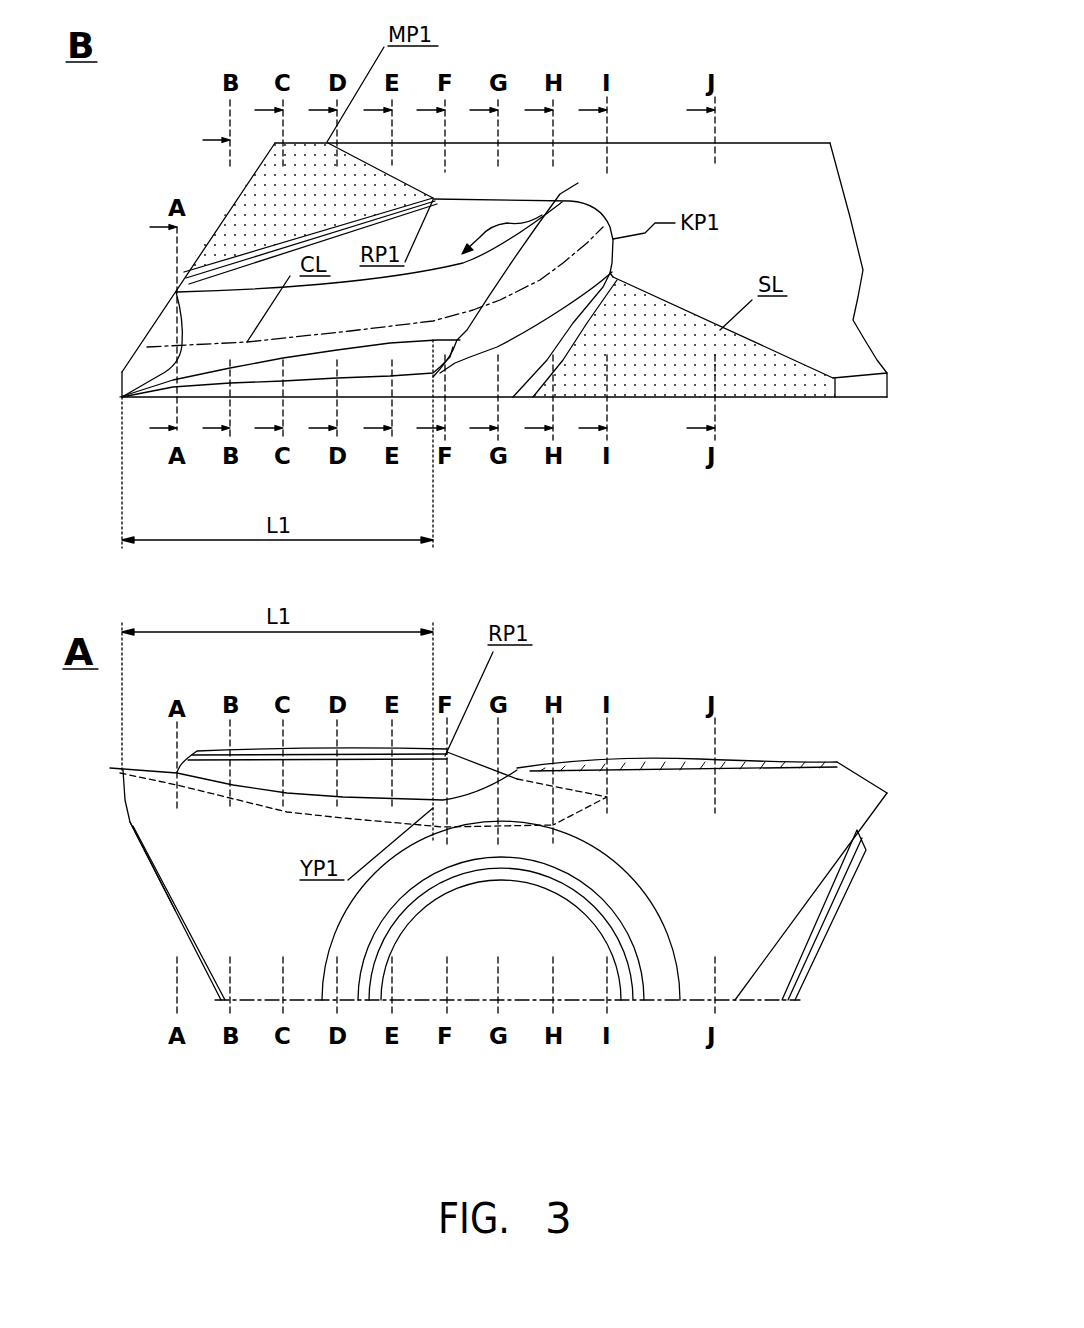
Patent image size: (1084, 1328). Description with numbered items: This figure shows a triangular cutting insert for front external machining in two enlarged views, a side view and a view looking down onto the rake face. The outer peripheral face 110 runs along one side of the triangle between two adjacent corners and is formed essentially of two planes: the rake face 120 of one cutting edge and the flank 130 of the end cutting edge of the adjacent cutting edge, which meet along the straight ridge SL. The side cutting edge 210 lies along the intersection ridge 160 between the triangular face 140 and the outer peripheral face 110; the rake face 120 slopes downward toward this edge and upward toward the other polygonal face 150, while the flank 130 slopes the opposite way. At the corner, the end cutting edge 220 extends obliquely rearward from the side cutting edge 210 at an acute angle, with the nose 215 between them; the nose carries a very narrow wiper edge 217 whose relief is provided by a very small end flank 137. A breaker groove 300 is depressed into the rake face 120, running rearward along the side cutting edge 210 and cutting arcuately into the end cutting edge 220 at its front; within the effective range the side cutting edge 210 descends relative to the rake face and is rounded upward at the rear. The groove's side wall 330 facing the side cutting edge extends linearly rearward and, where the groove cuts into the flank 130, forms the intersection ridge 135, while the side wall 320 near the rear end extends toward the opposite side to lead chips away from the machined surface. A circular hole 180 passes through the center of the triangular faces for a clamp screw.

The outer peripheral face 110 is at (178, 887).
The rake face 120 is at (280, 212).
The flank 130 is at (798, 227).
The intersection ridge 135 is at (513, 200).
The end flank 137 is at (860, 387).
The triangular face 140 is at (790, 397).
The other polygonal face 150 is at (650, 143).
The intersection ridge 160 is at (740, 767).
The hole 180 is at (527, 880).
The side cutting edge 210 is at (200, 398).
The nose 215 is at (120, 398).
The wiper edge 217 is at (120, 385).
The end cutting edge 220 is at (147, 330).
The breaker groove 300 is at (168, 338).
The side wall 320 is at (558, 312).
The side wall 330 is at (455, 228).